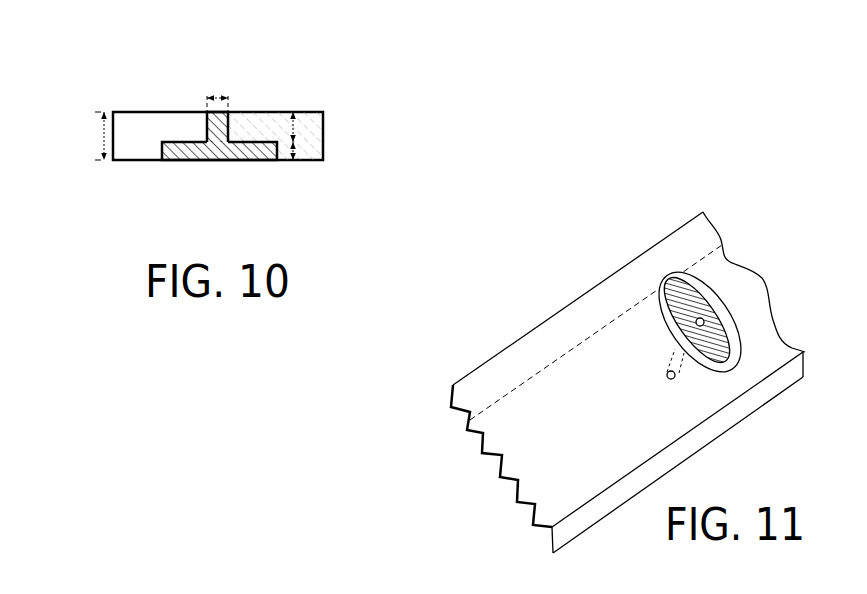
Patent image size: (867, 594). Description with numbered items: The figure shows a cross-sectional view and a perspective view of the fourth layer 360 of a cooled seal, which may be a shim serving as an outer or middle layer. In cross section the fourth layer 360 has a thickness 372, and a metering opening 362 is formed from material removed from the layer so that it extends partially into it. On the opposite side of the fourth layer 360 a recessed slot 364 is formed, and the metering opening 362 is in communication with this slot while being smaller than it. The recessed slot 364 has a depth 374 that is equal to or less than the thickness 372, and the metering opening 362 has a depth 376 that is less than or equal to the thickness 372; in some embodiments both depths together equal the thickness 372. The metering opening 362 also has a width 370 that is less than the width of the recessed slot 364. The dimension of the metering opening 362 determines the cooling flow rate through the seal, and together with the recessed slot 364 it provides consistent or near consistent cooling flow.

In FIG. 10, the fourth layer 360 is at (325, 80).
In FIG. 10, the metering opening 362 is at (206, 119).
In FIG. 11, the metering opening 362 is at (667, 373).
In FIG. 10, the recessed slot 364 is at (277, 180).
In FIG. 11, the recessed slot 364 is at (708, 374).
In FIG. 10, the width of the metering opening 370 is at (210, 95).
In FIG. 10, the thickness of the fourth layer 372 is at (104, 111).
In FIG. 10, the depth of the recessed slot 374 is at (301, 91).
In FIG. 10, the depth of the metering opening 376 is at (293, 160).